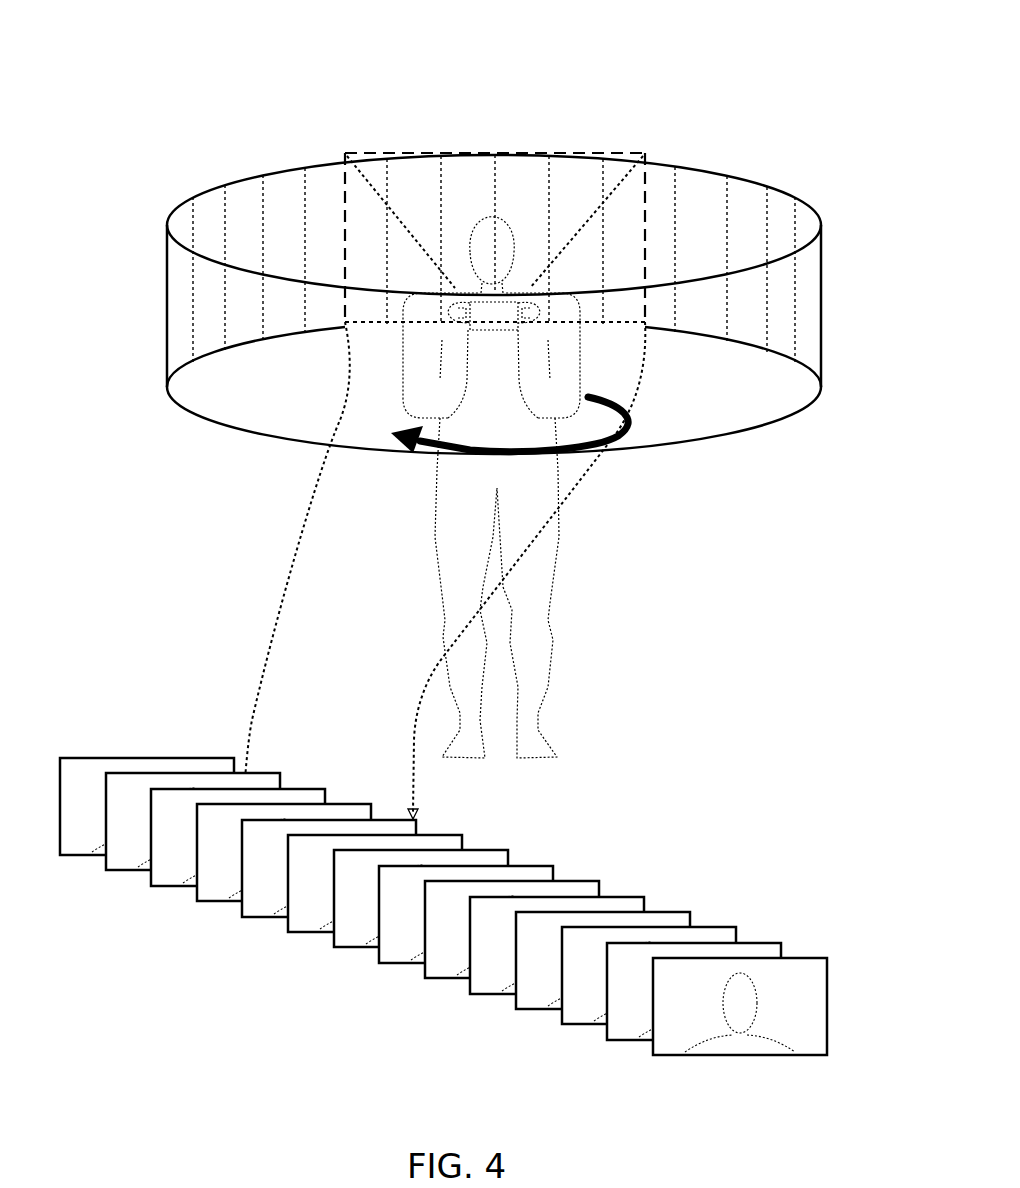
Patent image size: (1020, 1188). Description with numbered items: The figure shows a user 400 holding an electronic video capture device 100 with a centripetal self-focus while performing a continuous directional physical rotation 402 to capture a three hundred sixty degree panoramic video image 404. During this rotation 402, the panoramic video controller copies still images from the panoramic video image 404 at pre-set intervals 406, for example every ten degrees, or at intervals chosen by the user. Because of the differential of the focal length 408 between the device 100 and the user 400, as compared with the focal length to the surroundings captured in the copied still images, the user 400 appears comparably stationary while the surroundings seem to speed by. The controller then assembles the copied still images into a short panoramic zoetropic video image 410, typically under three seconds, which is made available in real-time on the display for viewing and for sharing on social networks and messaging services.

The user 400 is at (465, 228).
The electronic video capture device 100 is at (497, 297).
The focal length 408 is at (586, 220).
The pre-set intervals 406 is at (767, 213).
The 360° panoramic video image 404 is at (167, 305).
The physical rotation 402 is at (630, 425).
The 360° panoramic zoetropic video image 410 is at (250, 770).